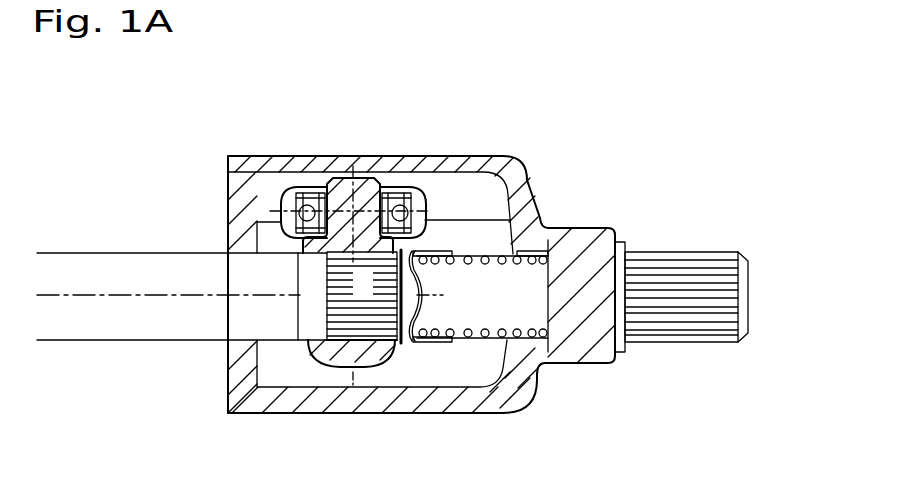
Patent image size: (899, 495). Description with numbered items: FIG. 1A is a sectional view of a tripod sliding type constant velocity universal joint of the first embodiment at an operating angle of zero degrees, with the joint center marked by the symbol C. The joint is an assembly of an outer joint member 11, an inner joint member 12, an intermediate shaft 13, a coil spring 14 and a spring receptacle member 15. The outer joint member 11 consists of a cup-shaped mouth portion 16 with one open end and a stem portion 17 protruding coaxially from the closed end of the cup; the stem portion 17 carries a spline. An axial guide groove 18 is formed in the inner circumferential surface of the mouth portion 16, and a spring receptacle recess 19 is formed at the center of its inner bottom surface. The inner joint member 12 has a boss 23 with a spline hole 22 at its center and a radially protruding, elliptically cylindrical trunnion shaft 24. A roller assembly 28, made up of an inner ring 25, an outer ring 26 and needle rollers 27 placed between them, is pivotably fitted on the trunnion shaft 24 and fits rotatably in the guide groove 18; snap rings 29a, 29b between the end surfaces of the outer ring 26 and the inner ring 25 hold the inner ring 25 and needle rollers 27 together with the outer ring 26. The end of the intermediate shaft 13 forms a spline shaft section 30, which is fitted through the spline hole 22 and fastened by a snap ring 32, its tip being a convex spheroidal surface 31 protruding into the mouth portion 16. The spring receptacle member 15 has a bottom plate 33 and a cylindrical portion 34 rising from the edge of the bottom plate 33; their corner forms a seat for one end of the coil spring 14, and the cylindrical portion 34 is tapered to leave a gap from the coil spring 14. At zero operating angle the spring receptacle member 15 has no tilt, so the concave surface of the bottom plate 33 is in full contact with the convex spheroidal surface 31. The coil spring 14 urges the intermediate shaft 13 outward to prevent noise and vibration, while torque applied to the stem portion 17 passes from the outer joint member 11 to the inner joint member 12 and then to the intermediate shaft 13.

The outer joint member 11 is at (424, 145).
The inner joint member 12 is at (316, 370).
The intermediate shaft 13 is at (80, 178).
The coil spring 14 is at (501, 350).
The spring receptacle member 15 is at (438, 350).
The mouth portion 16 is at (240, 157).
The stem portion 17 is at (697, 245).
The axial guide groove 18 is at (497, 188).
The spring receptacle recess 19 is at (540, 240).
The spline hole 22 is at (346, 342).
The boss 23 is at (357, 348).
The trunnion shaft 24 is at (351, 180).
The inner ring 25 is at (316, 190).
The outer ring 26 is at (285, 195).
The needle rollers 27 is at (300, 190).
The roller assembly 28 is at (433, 190).
The snap ring 29a is at (262, 222).
The snap ring 29b is at (409, 190).
The spline shaft section 30 is at (343, 305).
The convex spheroidal surface 31 is at (416, 346).
The snap ring 32 is at (402, 348).
The bottom plate 33 is at (443, 285).
The cylindrical portion 34 is at (443, 250).